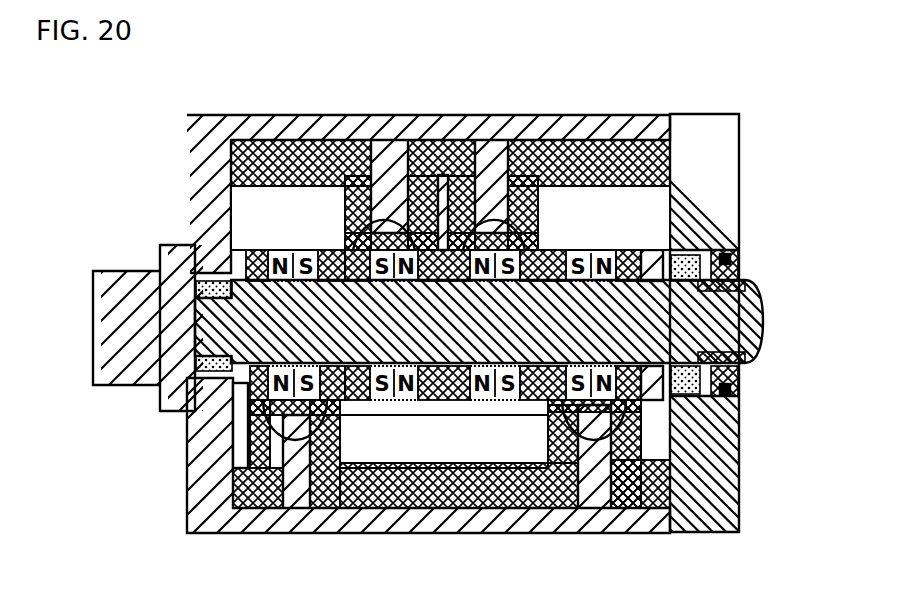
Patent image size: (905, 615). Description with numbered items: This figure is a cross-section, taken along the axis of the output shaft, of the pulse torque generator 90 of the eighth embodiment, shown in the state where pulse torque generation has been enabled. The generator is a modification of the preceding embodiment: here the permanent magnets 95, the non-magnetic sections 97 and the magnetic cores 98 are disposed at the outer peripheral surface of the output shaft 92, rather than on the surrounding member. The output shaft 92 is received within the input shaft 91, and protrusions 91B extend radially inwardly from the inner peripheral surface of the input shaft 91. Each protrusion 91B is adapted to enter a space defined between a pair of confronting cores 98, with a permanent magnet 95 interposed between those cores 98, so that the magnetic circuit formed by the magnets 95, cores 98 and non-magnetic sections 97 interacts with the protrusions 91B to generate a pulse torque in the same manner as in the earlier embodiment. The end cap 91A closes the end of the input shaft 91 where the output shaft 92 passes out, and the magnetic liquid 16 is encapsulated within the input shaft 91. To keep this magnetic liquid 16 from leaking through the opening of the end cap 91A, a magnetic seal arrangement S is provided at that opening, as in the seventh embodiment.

The motor 90 is at (772, 157).
The input shaft 91 is at (195, 235).
The end cap 91A is at (705, 150).
The protrusions 91B is at (385, 170).
The output shaft 92 is at (180, 340).
The permanent magnets 95 is at (283, 180).
The non-magnetic sections 97 is at (345, 200).
The magnetic section (cores) 98 is at (235, 140).
The magnetic liquid 16 is at (395, 475).
The magnetic seal arrangement S is at (740, 255).